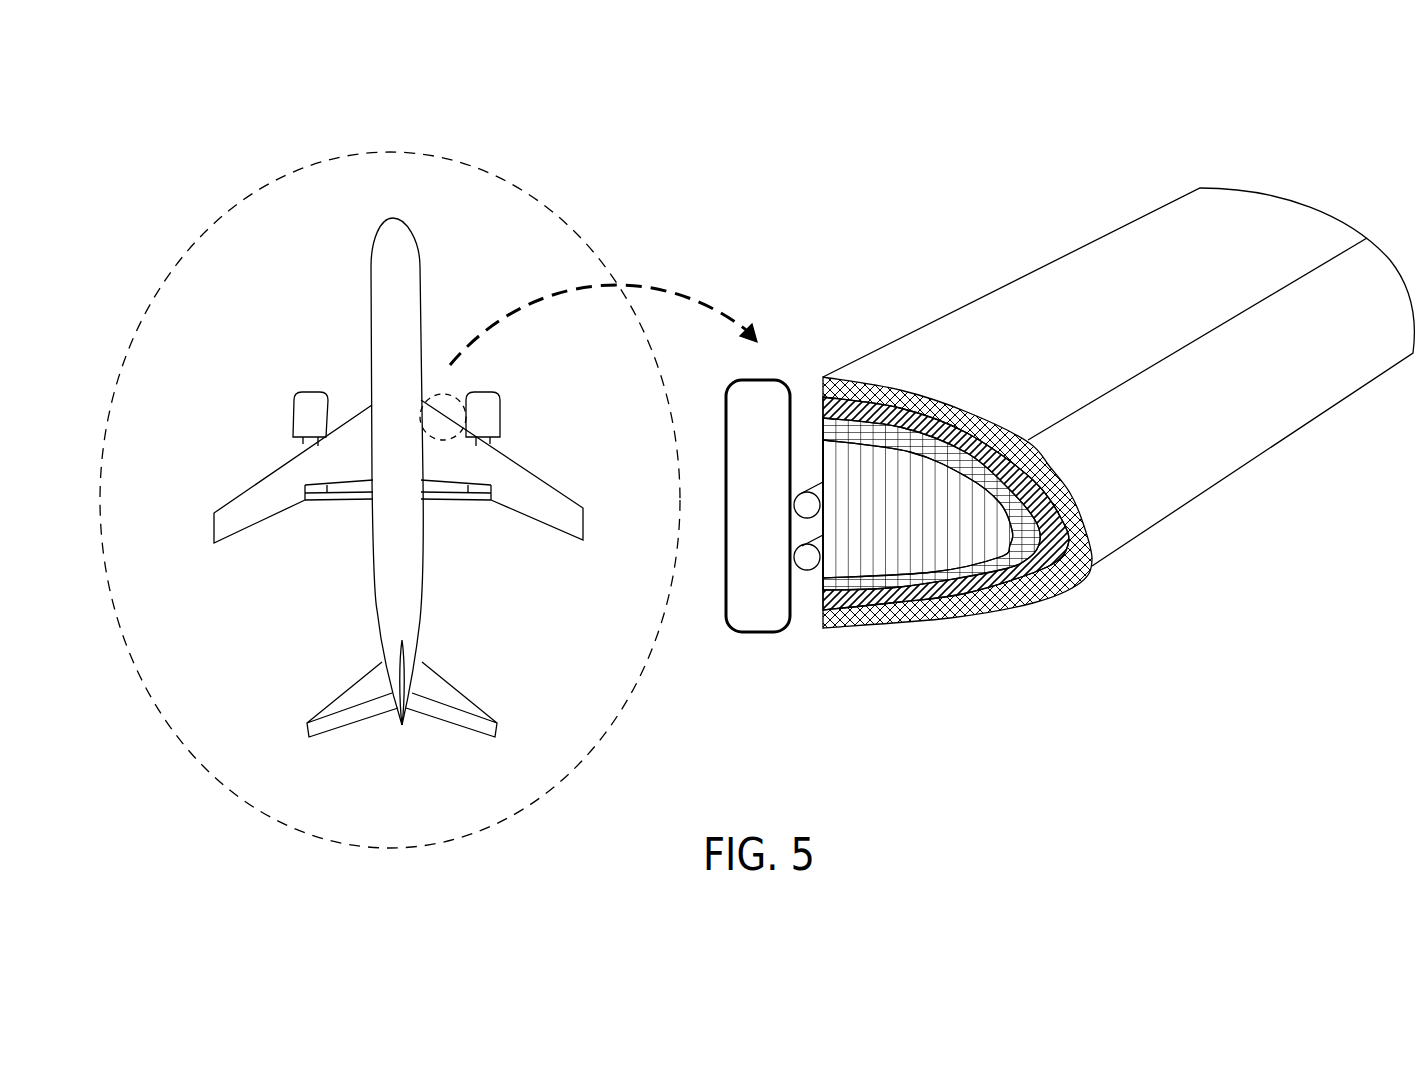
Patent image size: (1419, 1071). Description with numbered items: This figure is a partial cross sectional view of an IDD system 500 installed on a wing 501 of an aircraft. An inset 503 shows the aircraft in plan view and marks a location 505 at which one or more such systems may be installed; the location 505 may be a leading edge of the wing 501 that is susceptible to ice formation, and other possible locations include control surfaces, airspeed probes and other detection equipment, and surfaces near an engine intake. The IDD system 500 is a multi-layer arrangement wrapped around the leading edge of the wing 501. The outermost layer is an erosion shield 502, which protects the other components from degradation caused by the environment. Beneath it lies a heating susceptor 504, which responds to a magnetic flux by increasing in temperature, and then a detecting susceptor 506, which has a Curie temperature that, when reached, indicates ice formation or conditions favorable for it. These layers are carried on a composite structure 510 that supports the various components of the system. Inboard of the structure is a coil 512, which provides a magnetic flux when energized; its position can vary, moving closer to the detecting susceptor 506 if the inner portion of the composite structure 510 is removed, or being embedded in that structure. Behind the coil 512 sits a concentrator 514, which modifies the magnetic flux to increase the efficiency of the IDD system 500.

The IDD system 500 is at (939, 471).
The wing 501 is at (1150, 174).
The erosion shield 502 is at (1077, 567).
The inset 503 is at (470, 165).
The heating susceptor 504 is at (1022, 577).
The location 505 is at (438, 392).
The detecting susceptor 506 is at (965, 577).
The composite structure 510 is at (870, 547).
The coil 512 is at (806, 588).
The concentrator 514 is at (781, 518).